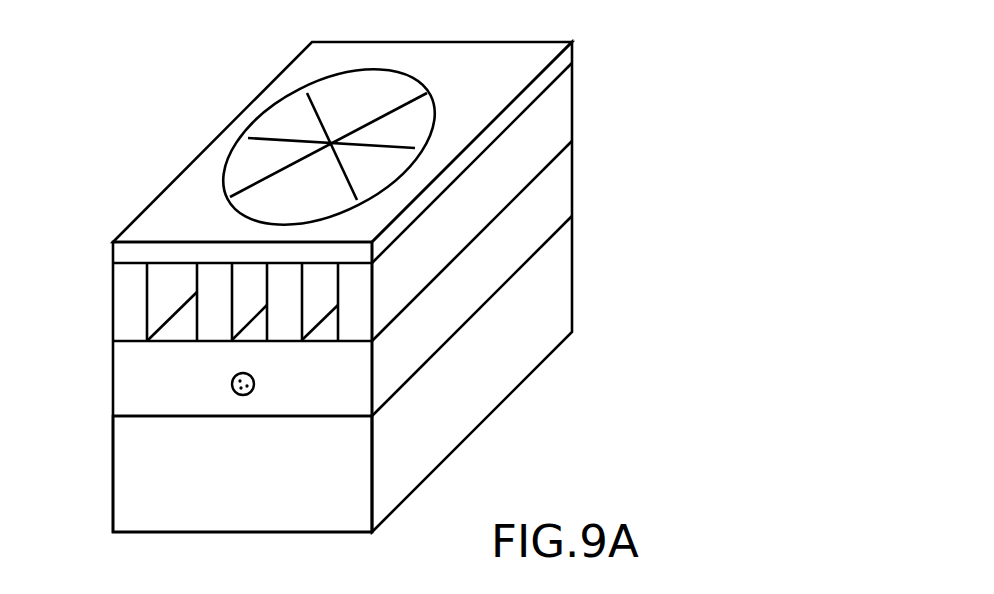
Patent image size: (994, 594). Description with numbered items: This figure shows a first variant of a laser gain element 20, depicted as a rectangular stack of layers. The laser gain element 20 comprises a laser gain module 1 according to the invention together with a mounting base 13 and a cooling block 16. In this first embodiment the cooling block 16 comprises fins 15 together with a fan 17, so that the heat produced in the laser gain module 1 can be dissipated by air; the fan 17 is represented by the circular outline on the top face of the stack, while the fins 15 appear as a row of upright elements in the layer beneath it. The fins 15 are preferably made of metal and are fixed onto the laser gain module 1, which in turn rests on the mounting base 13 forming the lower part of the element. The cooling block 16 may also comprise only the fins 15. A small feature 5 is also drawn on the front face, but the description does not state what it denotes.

The light emitting device 20 is at (79, 57).
The top layer 17 is at (562, 55).
The intermediate layer 16 is at (562, 108).
The electrode cells 15 is at (160, 292).
The substrate 1 is at (562, 187).
The base 13 is at (542, 285).
The via 5 is at (232, 385).